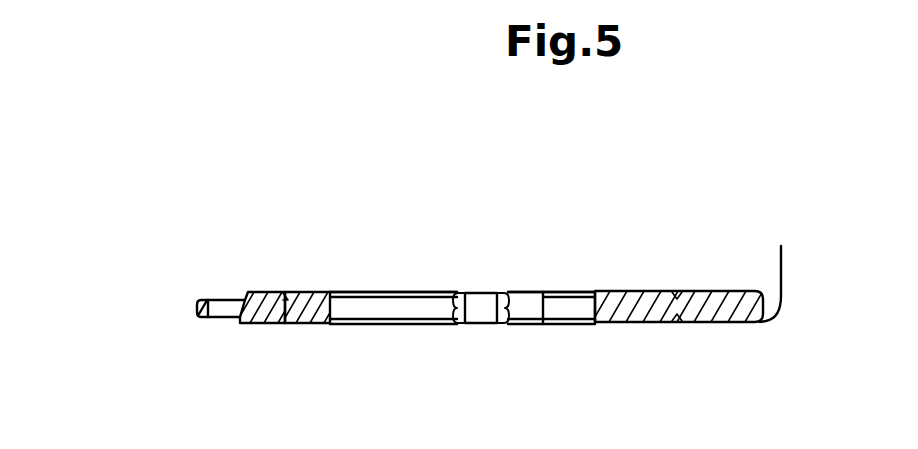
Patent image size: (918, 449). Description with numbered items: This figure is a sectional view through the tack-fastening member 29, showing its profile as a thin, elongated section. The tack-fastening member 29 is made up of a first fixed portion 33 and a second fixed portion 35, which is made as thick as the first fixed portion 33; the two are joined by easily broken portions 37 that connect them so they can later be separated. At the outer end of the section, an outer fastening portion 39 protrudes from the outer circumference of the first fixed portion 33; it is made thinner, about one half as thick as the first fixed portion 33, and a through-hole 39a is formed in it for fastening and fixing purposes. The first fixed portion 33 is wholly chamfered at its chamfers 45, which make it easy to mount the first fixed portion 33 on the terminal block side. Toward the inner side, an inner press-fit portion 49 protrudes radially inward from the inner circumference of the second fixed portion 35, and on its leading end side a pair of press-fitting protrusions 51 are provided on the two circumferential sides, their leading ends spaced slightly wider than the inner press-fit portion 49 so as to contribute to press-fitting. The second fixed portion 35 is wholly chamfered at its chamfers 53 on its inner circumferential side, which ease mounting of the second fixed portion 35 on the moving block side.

The tack-fastening member 29 is at (617, 224).
The first fixed portion 33 is at (258, 325).
The second fixed portion 35 is at (318, 325).
The easily broken portions 37 is at (283, 292).
The outer fastening portions 39 is at (197, 306).
The through-holes 39a is at (226, 298).
The chamfers 45 is at (200, 295).
The inner press-fit portions 49 is at (480, 308).
The press-fitting protrusions 51 is at (433, 292).
The chamfers 53 is at (340, 292).